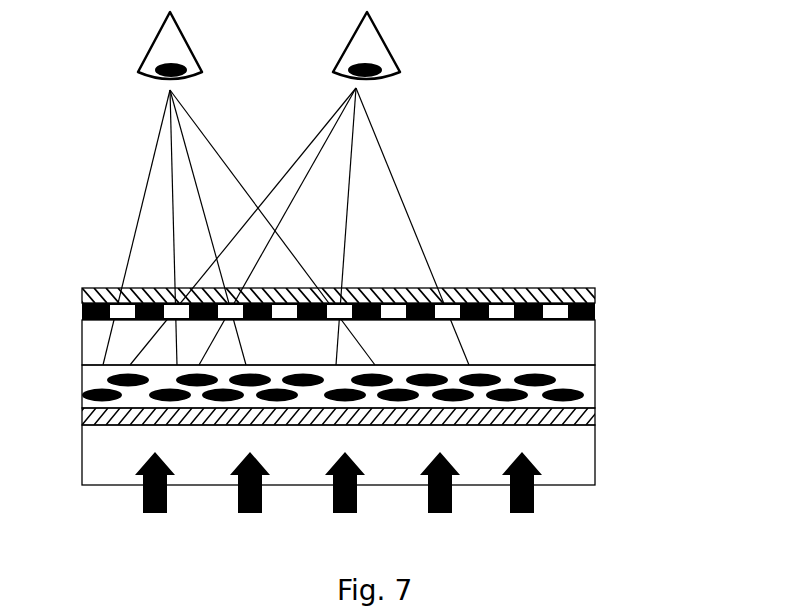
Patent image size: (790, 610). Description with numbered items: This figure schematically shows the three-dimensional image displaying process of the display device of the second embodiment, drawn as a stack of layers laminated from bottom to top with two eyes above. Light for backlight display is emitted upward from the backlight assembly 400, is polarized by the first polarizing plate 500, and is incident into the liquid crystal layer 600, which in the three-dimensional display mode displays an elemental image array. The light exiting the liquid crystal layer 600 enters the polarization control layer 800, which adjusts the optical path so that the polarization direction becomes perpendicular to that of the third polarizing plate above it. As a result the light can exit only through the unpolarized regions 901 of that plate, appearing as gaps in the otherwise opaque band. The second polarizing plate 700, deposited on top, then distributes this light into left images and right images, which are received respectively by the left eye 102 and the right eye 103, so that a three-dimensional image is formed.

The left eye 102 is at (425, 50).
The right eye 103 is at (127, 59).
The unpolarized regions 901 is at (564, 258).
The second polarizing plate 700 is at (595, 292).
The polarization control layer 800 is at (577, 340).
The liquid crystal layer 600 is at (578, 383).
The first polarizing plate 500 is at (595, 417).
The backlight assembly 400 is at (588, 460).